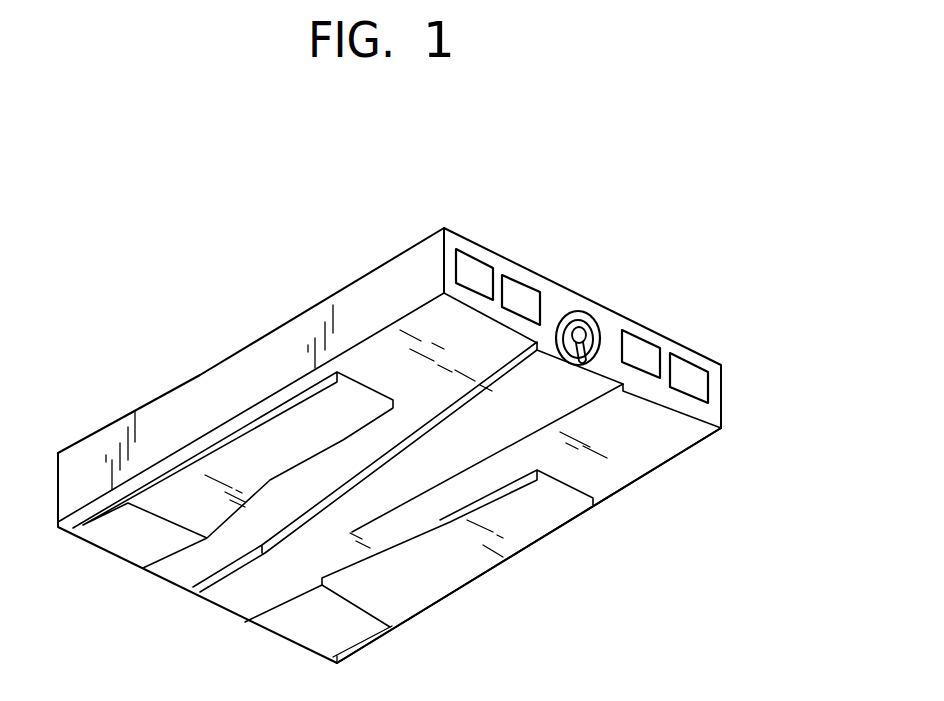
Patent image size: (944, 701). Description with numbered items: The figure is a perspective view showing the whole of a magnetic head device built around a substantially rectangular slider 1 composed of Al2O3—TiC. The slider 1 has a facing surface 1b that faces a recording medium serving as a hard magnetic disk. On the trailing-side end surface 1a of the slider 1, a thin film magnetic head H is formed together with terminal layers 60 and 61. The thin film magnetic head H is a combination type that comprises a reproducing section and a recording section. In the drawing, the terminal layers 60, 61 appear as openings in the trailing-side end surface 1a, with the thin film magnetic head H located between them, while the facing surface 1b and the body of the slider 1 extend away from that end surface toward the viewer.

The slider 1 is at (278, 318).
The trailing-side end surface 1a is at (714, 416).
The facing surface 1b is at (637, 443).
The terminal layer 60 is at (477, 267).
The terminal layer 61 is at (522, 290).
The thin film magnetic head H is at (582, 310).